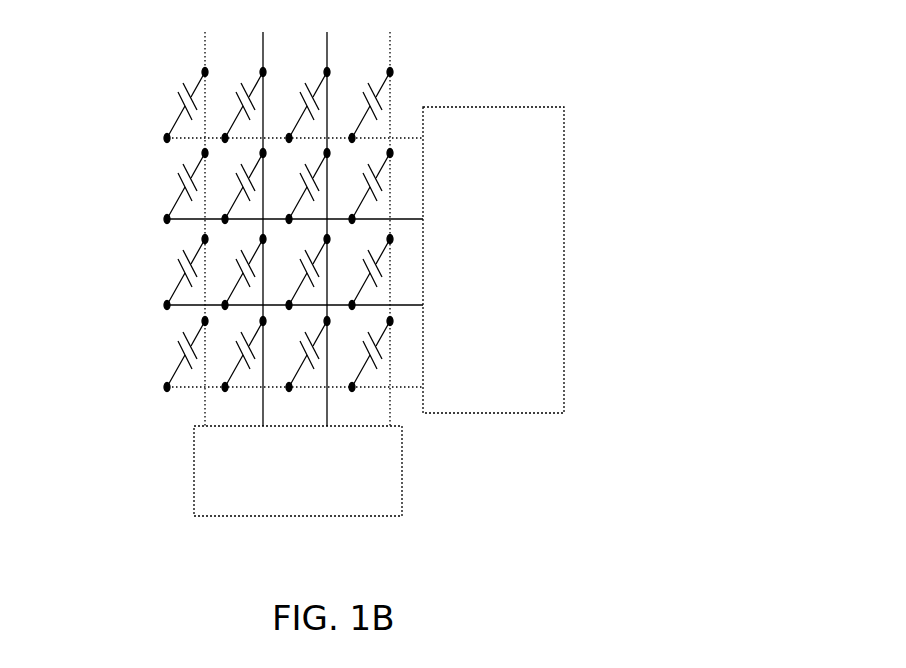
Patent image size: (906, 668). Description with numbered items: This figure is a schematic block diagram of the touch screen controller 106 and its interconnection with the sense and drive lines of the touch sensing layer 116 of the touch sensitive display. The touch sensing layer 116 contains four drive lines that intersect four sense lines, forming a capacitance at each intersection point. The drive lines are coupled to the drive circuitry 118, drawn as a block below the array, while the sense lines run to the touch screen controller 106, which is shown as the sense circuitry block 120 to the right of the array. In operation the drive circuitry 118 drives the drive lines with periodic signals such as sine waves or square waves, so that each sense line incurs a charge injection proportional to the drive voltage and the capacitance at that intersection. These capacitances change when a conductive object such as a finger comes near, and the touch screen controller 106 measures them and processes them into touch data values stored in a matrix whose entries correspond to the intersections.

The touch screen controller 106 is at (460, 471).
The touch sensing layer 116 is at (128, 42).
The drive circuitry 118 is at (248, 516).
The sense circuitry 120 is at (564, 208).